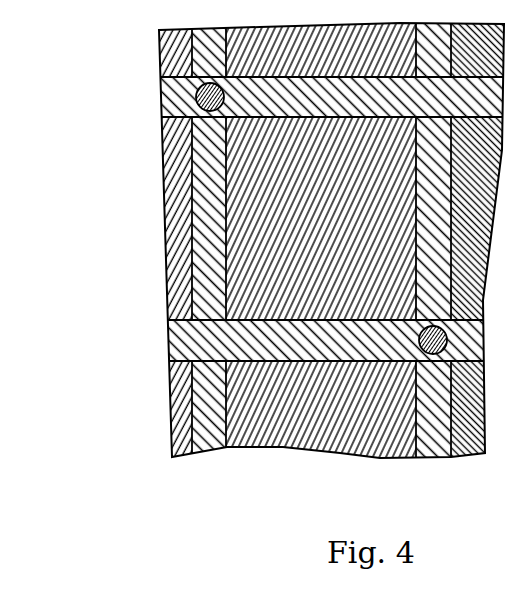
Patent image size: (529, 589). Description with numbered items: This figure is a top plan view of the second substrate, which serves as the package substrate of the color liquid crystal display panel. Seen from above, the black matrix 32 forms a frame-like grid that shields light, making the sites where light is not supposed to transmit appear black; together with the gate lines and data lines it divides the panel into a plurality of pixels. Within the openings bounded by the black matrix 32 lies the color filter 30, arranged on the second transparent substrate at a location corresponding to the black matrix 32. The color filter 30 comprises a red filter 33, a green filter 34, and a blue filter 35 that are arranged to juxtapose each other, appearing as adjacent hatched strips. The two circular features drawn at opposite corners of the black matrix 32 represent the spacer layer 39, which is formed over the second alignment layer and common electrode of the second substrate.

The color filter 30 is at (269, 235).
The black matrix 32 is at (210, 148).
The red filter 33 is at (163, 200).
The green filter 34 is at (255, 249).
The blue filter 35 is at (470, 267).
The spacer layer 39 is at (198, 93).